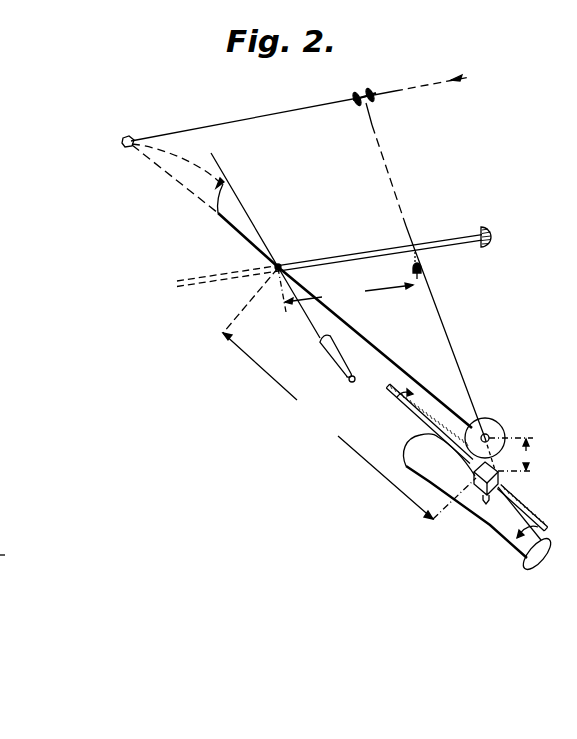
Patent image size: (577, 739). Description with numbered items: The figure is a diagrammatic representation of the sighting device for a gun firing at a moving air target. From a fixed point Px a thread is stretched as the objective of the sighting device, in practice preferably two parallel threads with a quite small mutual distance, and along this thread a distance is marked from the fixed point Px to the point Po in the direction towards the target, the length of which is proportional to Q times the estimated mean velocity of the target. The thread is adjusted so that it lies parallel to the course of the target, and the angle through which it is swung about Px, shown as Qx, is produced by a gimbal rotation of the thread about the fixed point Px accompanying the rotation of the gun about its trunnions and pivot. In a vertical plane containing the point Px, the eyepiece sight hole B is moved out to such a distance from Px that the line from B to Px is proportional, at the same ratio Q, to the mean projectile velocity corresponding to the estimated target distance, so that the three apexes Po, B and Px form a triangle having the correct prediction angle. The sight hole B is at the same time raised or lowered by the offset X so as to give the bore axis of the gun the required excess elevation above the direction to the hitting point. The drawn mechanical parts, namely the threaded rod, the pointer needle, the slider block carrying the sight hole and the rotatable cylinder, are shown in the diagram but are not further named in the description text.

The hitting point / fixed point of the thread Px is at (295, 259).
The target position / thread point Po is at (423, 272).
The angle of rotation Qx is at (184, 181).
The sight hole B is at (485, 427).
The offset distance X is at (511, 454).
The threaded spindle rod is at (466, 457).
The pointer needle is at (337, 358).
The slider block is at (486, 483).
The rotatable cylinder is at (480, 504).